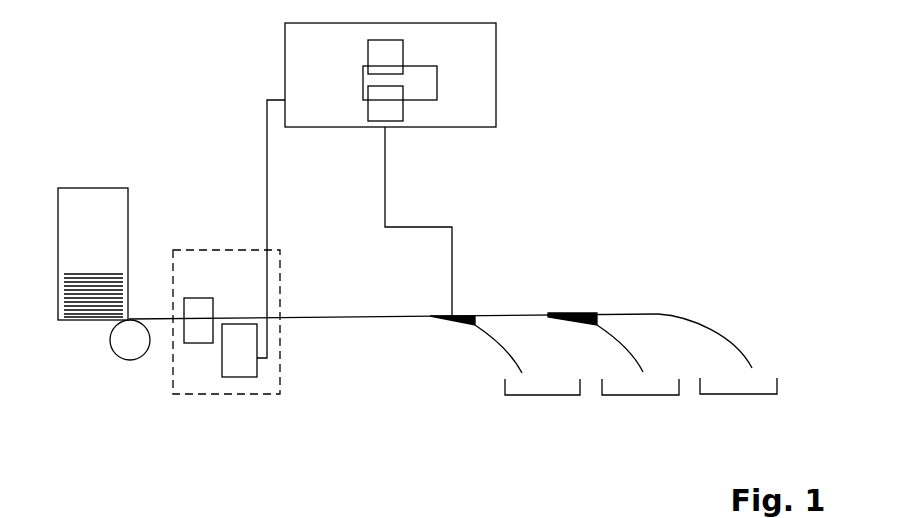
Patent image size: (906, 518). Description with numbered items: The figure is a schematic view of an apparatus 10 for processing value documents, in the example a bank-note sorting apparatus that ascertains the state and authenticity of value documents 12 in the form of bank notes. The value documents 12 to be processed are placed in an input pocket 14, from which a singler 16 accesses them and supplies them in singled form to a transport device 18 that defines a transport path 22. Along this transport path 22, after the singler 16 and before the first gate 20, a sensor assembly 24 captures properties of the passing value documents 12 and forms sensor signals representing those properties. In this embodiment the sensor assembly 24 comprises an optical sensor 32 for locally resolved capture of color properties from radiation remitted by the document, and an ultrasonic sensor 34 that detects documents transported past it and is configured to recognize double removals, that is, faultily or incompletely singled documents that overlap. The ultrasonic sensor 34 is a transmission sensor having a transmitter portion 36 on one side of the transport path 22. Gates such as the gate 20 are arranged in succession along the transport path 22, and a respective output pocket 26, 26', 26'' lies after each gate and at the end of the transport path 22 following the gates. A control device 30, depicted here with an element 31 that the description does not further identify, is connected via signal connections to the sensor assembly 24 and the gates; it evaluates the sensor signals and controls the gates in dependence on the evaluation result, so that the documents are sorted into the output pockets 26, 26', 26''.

The apparatus for processing value documents 10 is at (142, 80).
The value documents 12 is at (88, 280).
The input pocket 14 is at (93, 187).
The singler 16 is at (133, 361).
The transport device 18 is at (161, 331).
The gate 20 is at (453, 316).
The transport path 22 is at (433, 338).
The sensor assembly 24 is at (278, 380).
The output pocket 26 is at (554, 393).
The output pocket 26' is at (667, 391).
The output pocket 26'' is at (750, 385).
The control device 30 is at (496, 76).
The memory 31 is at (438, 83).
The optical sensor 32 is at (252, 365).
The ultrasonic sensor 34 is at (192, 348).
The transmitter portion 36 is at (368, 102).